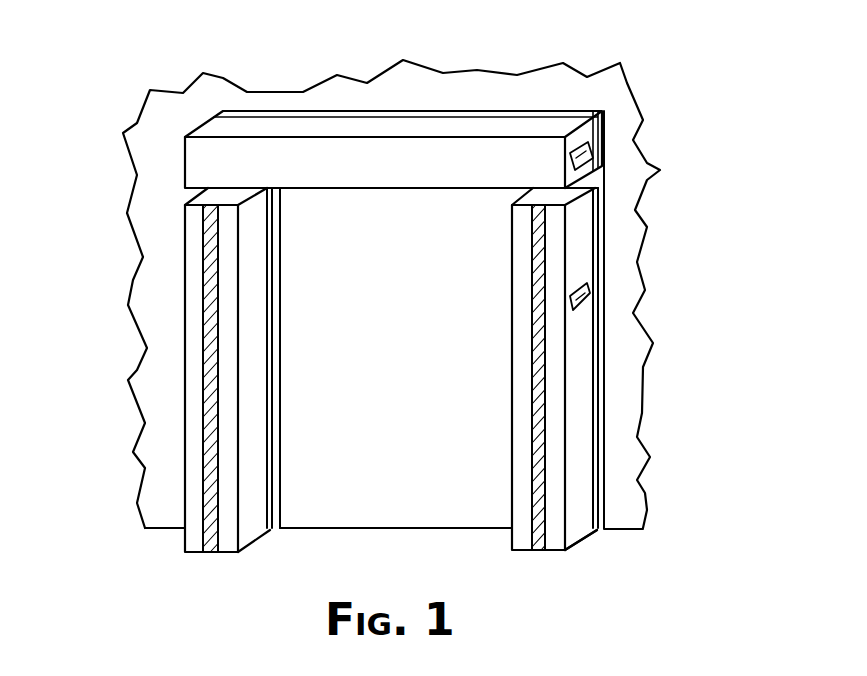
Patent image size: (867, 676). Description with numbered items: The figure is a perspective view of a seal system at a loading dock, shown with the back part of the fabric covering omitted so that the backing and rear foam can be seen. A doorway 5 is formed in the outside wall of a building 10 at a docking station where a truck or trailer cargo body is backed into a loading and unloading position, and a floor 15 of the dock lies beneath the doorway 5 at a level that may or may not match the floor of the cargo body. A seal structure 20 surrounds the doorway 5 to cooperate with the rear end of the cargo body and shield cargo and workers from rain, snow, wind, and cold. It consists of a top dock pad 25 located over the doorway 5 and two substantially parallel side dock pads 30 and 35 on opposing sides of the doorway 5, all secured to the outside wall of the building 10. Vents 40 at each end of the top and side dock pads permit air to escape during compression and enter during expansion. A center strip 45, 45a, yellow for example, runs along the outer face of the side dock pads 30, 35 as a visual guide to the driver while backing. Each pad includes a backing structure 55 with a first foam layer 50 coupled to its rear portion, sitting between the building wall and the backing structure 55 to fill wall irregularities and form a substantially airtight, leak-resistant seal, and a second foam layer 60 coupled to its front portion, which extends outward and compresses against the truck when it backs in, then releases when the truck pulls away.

The doorway 5 is at (388, 327).
The building 10 is at (508, 103).
The floor 15 is at (415, 527).
The seal structure 20 is at (214, 86).
The top dock pad 25 is at (348, 122).
The side dock pad 30 is at (170, 370).
The side dock pad 35 is at (617, 369).
The vent 40 is at (580, 152).
The center strip 45 is at (210, 355).
The center strip 45a is at (538, 400).
The first foam layer 50 is at (607, 507).
The backing structure 55 is at (595, 532).
The second foam layer 60 is at (575, 530).